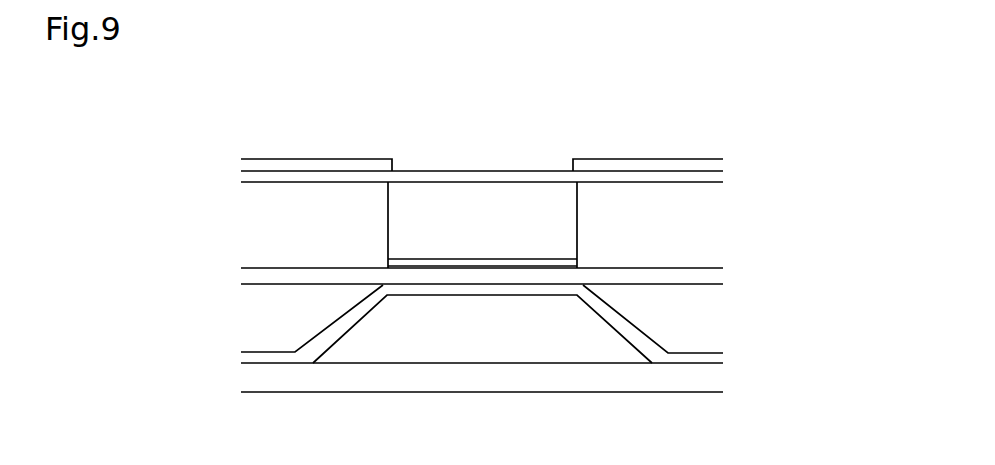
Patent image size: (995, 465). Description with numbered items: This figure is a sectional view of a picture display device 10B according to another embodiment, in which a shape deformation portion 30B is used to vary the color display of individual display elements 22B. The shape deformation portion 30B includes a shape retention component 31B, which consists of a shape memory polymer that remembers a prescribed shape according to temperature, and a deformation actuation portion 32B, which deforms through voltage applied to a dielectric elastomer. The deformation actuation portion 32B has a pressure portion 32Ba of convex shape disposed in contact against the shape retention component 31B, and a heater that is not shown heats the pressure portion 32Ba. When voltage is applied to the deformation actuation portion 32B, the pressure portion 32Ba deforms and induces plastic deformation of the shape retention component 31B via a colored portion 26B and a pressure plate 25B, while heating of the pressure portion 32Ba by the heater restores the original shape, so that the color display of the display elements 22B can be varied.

The picture display device 10B is at (718, 86).
The display element 22B is at (478, 183).
The pressure plate 25B is at (388, 268).
The colored portion 26B is at (433, 268).
The shape deformation portion 30B is at (555, 324).
The shape retention component 31B is at (656, 268).
The deformation actuation portion 32B is at (618, 317).
The pressure portion 32Ba is at (487, 295).